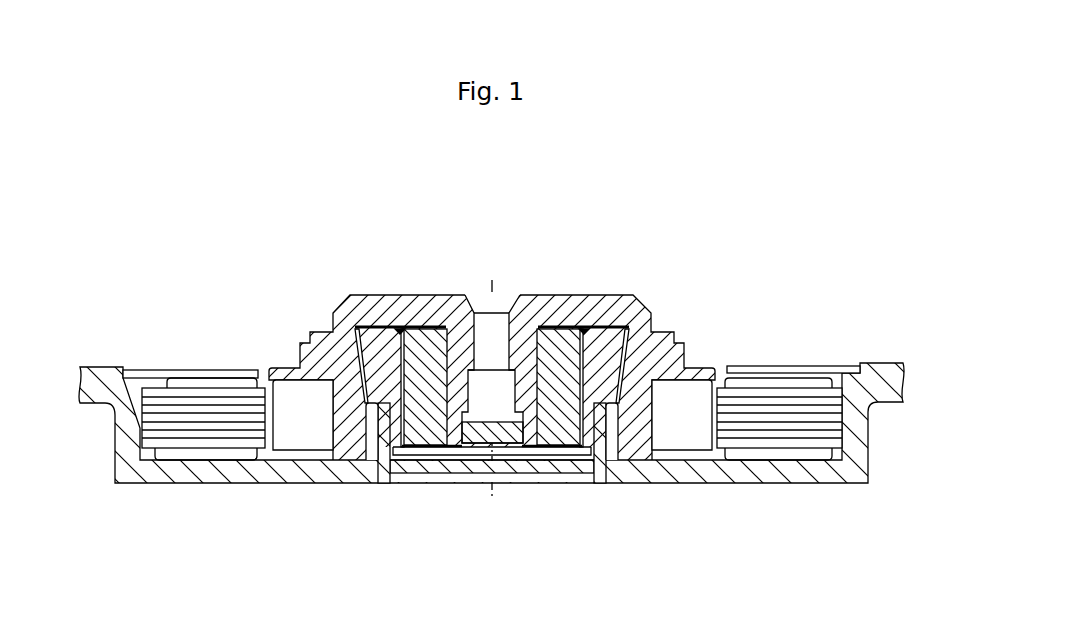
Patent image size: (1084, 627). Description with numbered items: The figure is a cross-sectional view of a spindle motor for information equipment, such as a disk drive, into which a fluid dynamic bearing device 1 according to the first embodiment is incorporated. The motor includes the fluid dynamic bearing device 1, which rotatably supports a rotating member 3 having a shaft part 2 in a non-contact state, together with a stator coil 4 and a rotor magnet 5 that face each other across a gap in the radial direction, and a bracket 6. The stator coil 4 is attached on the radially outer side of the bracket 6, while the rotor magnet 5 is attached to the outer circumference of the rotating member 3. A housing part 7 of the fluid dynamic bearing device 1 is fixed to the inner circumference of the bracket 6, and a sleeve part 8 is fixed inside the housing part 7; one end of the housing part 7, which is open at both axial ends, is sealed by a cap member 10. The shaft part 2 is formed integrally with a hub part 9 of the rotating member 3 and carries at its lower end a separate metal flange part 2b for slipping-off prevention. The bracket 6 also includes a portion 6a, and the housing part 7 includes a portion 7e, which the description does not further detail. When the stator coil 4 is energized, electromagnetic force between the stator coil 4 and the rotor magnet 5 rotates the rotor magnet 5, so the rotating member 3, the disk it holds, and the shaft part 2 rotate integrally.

The fluid dynamic bearing device 1 is at (588, 277).
The shaft part 2 is at (531, 377).
The flange part 2b is at (558, 450).
The rotating member 3 is at (489, 377).
The stator coil 4 is at (818, 384).
The rotor magnet 5 is at (692, 393).
The bracket 6 is at (207, 476).
The frame post 6a is at (383, 460).
The housing part 7 is at (383, 375).
The cup flange 7e is at (370, 453).
The sleeve part 8 is at (566, 422).
The hub part 9 is at (618, 291).
The cap member 10 is at (460, 465).